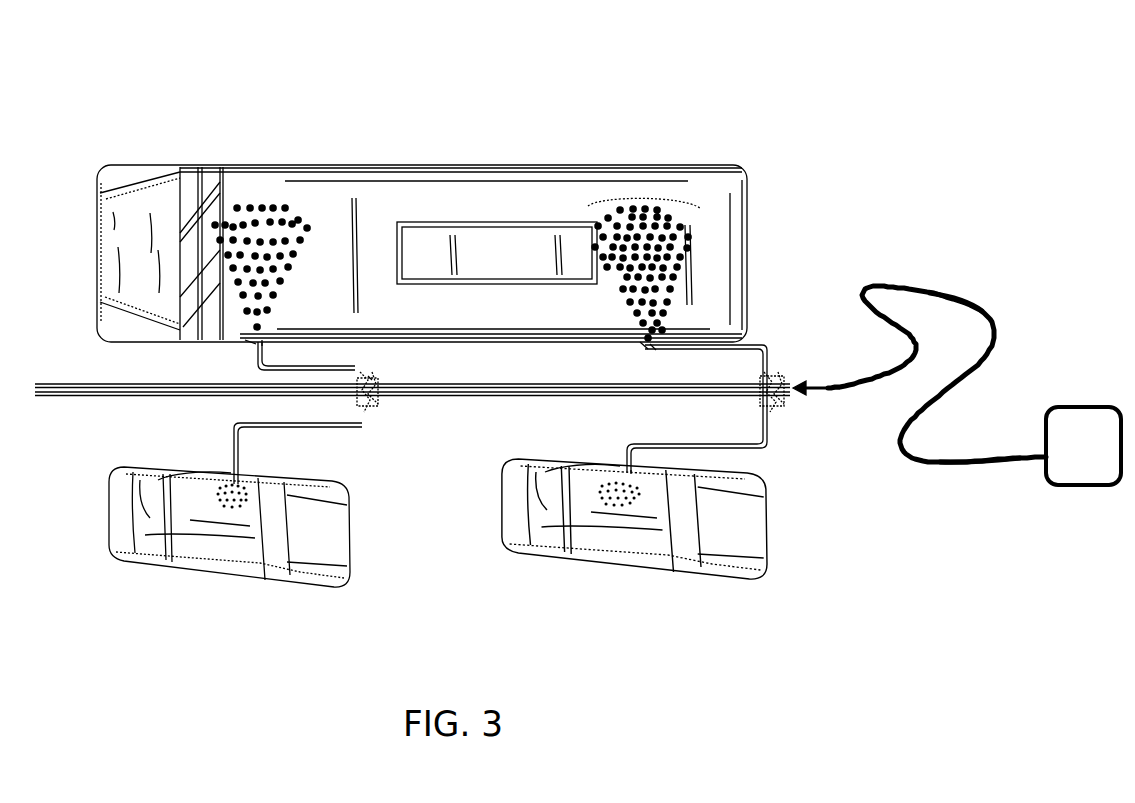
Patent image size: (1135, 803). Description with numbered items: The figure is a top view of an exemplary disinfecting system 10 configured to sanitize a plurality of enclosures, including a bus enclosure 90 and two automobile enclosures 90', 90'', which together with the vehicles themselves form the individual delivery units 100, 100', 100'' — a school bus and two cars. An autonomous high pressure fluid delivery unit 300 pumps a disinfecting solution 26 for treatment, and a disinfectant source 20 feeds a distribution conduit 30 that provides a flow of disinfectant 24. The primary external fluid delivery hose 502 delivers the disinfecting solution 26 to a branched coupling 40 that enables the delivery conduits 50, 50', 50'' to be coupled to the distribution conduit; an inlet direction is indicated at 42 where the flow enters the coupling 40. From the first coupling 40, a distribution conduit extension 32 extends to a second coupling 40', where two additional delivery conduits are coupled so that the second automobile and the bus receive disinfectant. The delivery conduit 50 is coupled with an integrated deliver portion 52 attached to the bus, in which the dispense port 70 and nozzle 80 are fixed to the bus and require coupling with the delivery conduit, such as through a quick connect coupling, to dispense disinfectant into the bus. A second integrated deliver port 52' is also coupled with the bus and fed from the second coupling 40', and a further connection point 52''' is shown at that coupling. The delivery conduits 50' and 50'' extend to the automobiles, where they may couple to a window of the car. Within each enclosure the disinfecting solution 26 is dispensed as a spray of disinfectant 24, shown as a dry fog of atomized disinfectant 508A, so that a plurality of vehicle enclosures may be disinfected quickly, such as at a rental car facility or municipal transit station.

The disinfecting system 10 is at (196, 127).
The delivery unit 100 is at (383, 253).
The bus enclosure 90 is at (461, 215).
The atomized disinfectant 508A is at (297, 203).
The disinfectant 24 is at (683, 225).
The distribution conduit extension 32 is at (53, 397).
The delivery conduit 50 is at (722, 367).
The delivery conduit 50' is at (298, 413).
The delivery conduit 50'' is at (721, 503).
The coupling 40 is at (792, 433).
The second coupling 40' is at (376, 440).
The flow arrow / inlet 42 is at (792, 382).
The distribution conduit 30 is at (878, 290).
The primary external fluid delivery hose 502 is at (980, 298).
The autonomous high pressure fluid delivery unit 300 is at (955, 465).
The disinfectant source 20 is at (1075, 465).
The disinfecting solution 26 is at (1068, 437).
The nozzle 80 is at (268, 346).
The second integrated deliver port 52' is at (221, 360).
The coupling 52''' is at (409, 370).
The integrated deliver portion 52 is at (687, 367).
The dispense port 70 is at (640, 346).
The delivery unit 100' is at (206, 527).
The automobile enclosure 90' is at (165, 559).
The delivery unit 100'' is at (597, 519).
The automobile enclosure 90'' is at (551, 549).